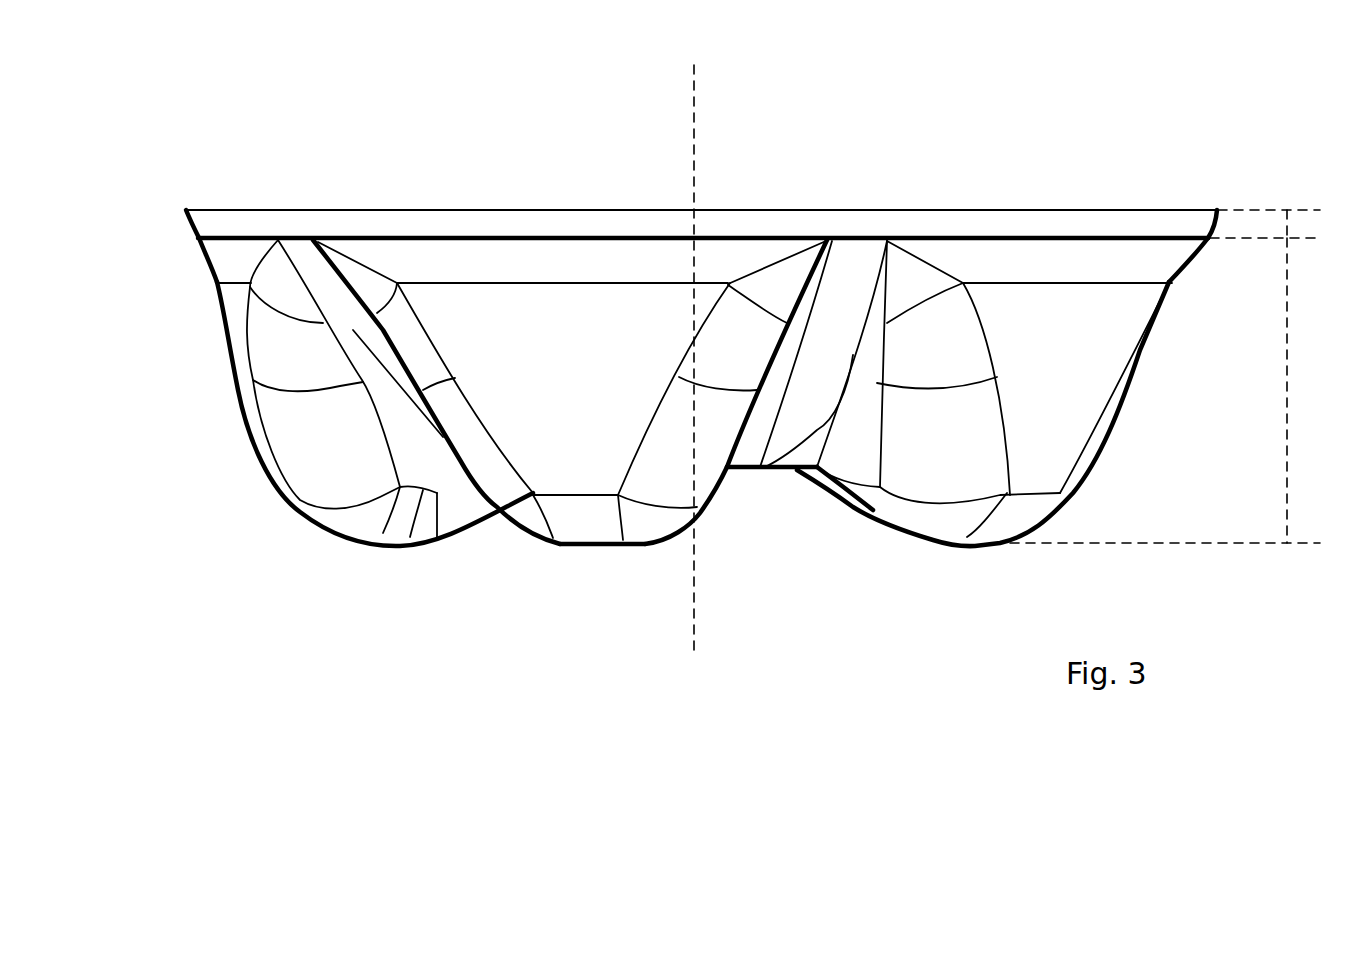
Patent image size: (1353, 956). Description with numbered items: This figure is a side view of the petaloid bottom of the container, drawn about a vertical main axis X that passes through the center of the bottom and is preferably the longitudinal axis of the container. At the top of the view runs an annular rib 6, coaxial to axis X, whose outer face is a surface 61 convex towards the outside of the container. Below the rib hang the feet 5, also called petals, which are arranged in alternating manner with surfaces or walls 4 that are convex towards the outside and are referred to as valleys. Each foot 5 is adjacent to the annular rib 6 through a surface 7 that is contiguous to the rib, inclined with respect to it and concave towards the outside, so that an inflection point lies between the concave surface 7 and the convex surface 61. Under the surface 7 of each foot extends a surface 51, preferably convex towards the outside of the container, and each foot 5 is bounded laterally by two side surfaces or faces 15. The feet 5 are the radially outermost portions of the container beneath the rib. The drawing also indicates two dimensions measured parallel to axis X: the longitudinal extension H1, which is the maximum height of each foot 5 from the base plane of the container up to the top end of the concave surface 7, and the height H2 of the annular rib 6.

The surface or wall 4 is at (325, 278).
The foot 5 is at (310, 422).
The annular rib 6 is at (240, 206).
The surface or wall 7 is at (207, 262).
The side surface 15 is at (380, 375).
The surface or wall 51 is at (568, 440).
The surface or wall 61 is at (185, 220).
The axis X is at (688, 146).
The longitudinal extension H1 is at (1287, 368).
The height H2 is at (1285, 226).